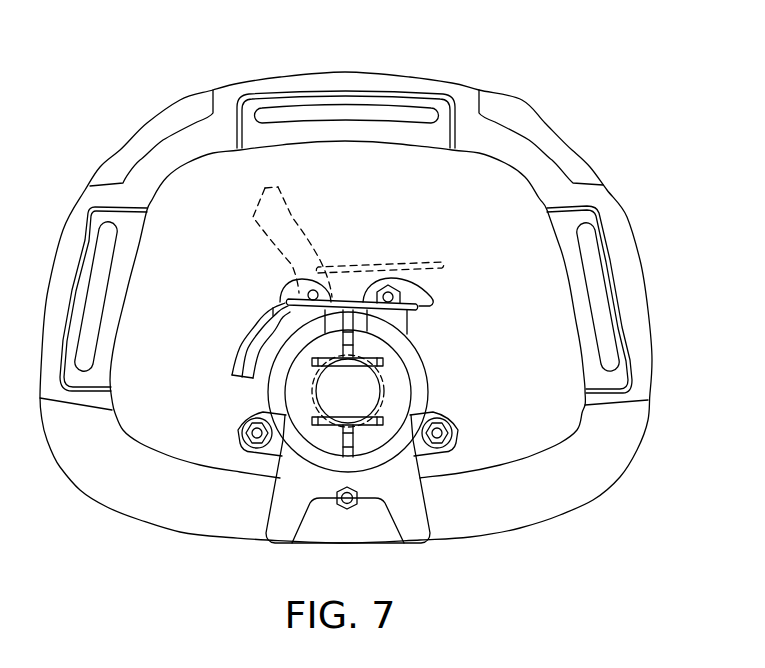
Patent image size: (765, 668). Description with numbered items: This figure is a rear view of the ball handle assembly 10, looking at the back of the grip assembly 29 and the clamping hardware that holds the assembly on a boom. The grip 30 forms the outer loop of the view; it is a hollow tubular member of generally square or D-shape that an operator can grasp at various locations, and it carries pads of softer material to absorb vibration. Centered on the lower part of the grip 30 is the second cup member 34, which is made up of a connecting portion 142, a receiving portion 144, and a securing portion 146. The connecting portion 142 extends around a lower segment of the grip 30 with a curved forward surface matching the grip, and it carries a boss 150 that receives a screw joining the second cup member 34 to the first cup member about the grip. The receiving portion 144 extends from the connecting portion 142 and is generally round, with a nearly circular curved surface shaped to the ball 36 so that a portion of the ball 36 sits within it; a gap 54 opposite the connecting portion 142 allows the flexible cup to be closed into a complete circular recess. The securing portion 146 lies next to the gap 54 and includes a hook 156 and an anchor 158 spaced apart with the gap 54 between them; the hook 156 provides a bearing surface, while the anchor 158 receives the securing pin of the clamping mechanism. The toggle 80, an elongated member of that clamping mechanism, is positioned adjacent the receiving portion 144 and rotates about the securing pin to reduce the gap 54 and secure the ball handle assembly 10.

The ball handle assembly 10 is at (71, 119).
The grip assembly 29 is at (458, 573).
The grip 30 is at (600, 198).
The second cup member 34 is at (287, 510).
The ball 36 is at (396, 383).
The gap 54 is at (358, 298).
The toggle 80 is at (242, 348).
The connecting portion 142 is at (419, 500).
The receiving portion 144 is at (438, 343).
The securing portion 146 is at (408, 254).
The boss 150 is at (241, 427).
The hook 156 is at (432, 294).
The anchor 158 is at (284, 307).